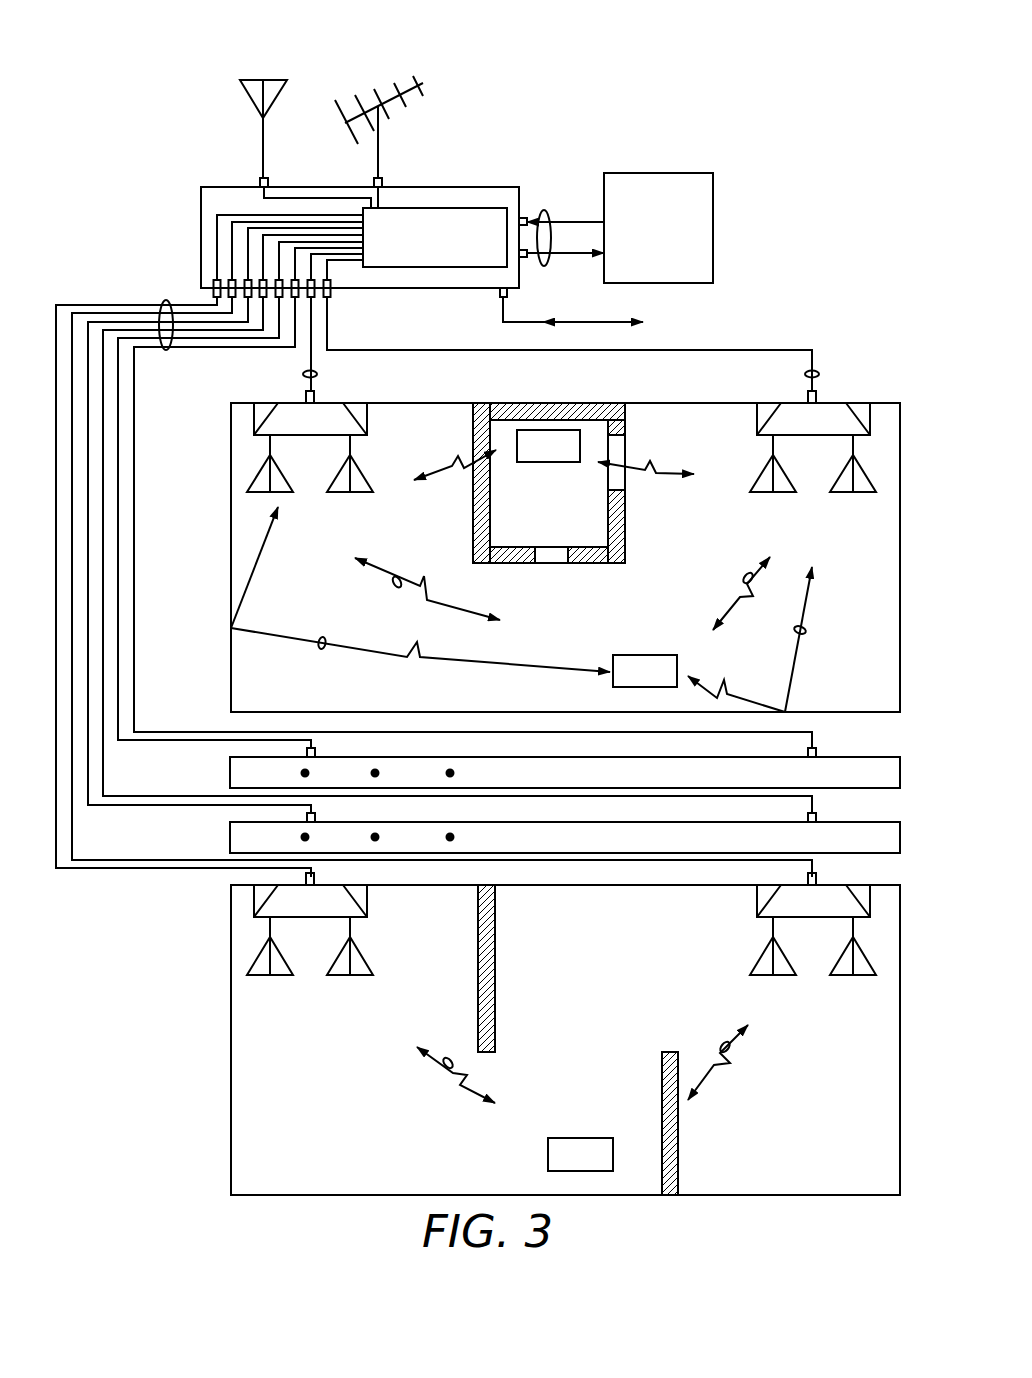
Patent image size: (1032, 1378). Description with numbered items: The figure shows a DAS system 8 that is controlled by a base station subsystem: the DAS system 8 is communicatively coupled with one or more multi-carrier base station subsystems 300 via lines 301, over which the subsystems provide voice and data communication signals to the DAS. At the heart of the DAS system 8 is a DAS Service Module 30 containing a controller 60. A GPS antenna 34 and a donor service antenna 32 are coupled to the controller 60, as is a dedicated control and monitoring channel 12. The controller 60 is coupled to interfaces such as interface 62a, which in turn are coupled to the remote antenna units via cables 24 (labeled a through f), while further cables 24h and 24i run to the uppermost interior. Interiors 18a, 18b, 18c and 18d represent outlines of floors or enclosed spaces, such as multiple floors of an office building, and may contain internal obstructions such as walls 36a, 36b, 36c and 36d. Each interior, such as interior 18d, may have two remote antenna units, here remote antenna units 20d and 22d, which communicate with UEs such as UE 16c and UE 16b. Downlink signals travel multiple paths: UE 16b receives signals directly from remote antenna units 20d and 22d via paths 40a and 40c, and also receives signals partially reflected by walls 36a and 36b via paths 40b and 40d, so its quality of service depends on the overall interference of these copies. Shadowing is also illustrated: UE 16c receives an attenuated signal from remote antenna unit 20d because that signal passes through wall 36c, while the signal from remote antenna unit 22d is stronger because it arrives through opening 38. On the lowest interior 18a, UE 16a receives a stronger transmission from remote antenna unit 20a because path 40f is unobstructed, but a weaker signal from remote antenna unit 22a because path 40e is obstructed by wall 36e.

The DAS system 8 is at (157, 129).
The dedicated control and monitoring channel 12 is at (618, 322).
The UE 16a is at (580, 1138).
The UE 16b is at (647, 655).
The UE 16c is at (550, 463).
The interior 18a is at (231, 1040).
The interior 18b is at (271, 850).
The interior 18c is at (271, 784).
The interior 18d is at (231, 548).
The remote antenna unit 20a is at (310, 917).
The remote antenna unit 20d is at (310, 435).
The remote antenna unit 22a is at (813, 917).
The remote antenna unit 22d is at (813, 435).
The cables 24 is at (166, 300).
The cable 24h is at (318, 374).
The cable 24i is at (820, 374).
The DAS Service Module 30 is at (519, 187).
The donor service antenna 32 is at (423, 84).
The GPS antenna 34 is at (240, 80).
The wall 36a is at (231, 672).
The wall 36b is at (503, 712).
The wall 36c is at (473, 503).
The wall 36d is at (495, 967).
The wall 36e is at (678, 1122).
The opening 38 is at (626, 445).
The path 40a is at (397, 588).
The path 40b is at (322, 637).
The path 40c is at (746, 575).
The path 40d is at (806, 630).
The path 40e is at (729, 1052).
The path 40f is at (448, 1070).
The controller 60 is at (437, 207).
The interface 62a is at (213, 292).
The multi-carrier base station subsystem 300 is at (680, 173).
The lines 301 is at (543, 210).